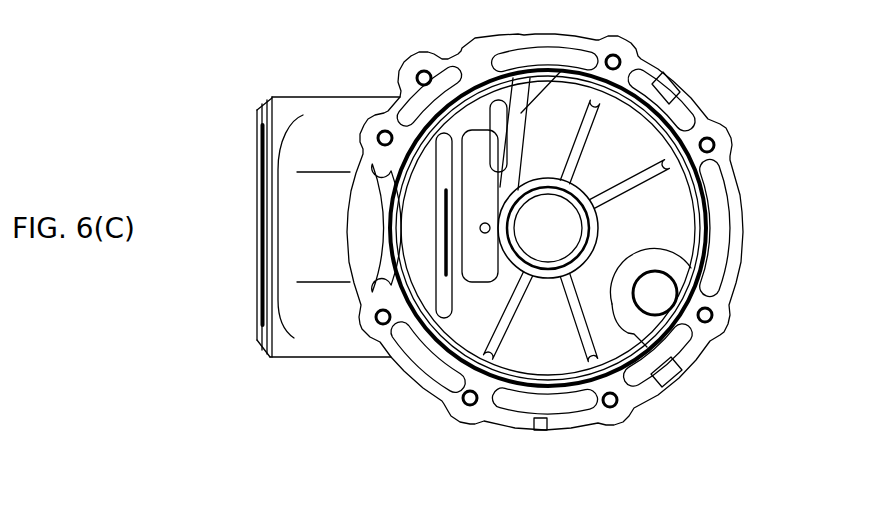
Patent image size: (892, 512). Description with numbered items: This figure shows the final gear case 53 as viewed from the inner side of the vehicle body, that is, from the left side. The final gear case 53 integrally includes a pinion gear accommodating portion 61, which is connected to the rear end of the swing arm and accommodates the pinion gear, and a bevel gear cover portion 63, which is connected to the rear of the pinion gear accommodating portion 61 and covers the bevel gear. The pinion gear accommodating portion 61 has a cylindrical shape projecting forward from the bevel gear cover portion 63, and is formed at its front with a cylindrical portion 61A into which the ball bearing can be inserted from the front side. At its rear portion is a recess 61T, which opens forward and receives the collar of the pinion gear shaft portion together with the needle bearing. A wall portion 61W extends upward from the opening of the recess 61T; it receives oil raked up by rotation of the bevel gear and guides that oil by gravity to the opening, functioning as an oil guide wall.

The final gear case 53 is at (762, 95).
The pinion gear accommodating portion 61 is at (323, 145).
The cylindrical portion 61A is at (260, 170).
The recess 61T is at (483, 177).
The wall portion 61W is at (562, 70).
The bevel gear cover portion 63 is at (664, 67).